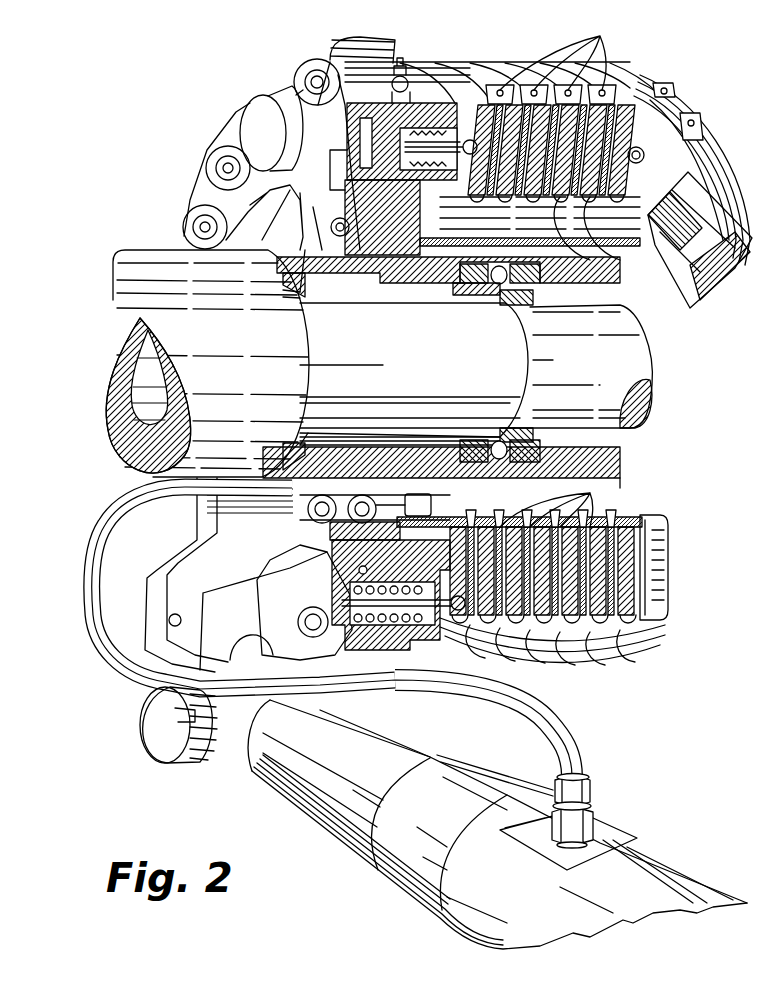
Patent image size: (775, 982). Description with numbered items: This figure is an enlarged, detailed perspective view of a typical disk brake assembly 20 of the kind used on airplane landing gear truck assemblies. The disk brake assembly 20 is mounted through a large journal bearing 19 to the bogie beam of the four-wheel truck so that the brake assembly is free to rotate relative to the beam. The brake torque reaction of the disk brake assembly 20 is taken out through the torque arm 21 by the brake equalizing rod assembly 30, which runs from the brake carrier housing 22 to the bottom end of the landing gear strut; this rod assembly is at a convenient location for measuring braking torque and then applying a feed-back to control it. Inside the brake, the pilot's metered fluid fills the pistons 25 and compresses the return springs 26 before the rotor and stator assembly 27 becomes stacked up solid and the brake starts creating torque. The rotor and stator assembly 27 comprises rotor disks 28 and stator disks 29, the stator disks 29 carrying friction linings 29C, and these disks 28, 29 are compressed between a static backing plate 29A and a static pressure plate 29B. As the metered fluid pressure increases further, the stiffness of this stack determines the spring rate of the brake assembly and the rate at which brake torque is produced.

The journal bearing 19 is at (323, 303).
The disk brake assembly 20 is at (182, 194).
The torque arm 21 is at (165, 738).
The brake carrier housing 22 is at (200, 227).
The pistons 25 is at (432, 104).
The return springs 26 is at (412, 612).
The rotor and stator assembly 27 is at (465, 58).
The rotor disks 28 is at (606, 36).
The stator disks 29 is at (590, 493).
The static backing plate 29A is at (660, 566).
The static pressure plate 29B is at (616, 441).
The friction linings 29C is at (612, 206).
The brake equalizing rod assembly 30 is at (415, 933).